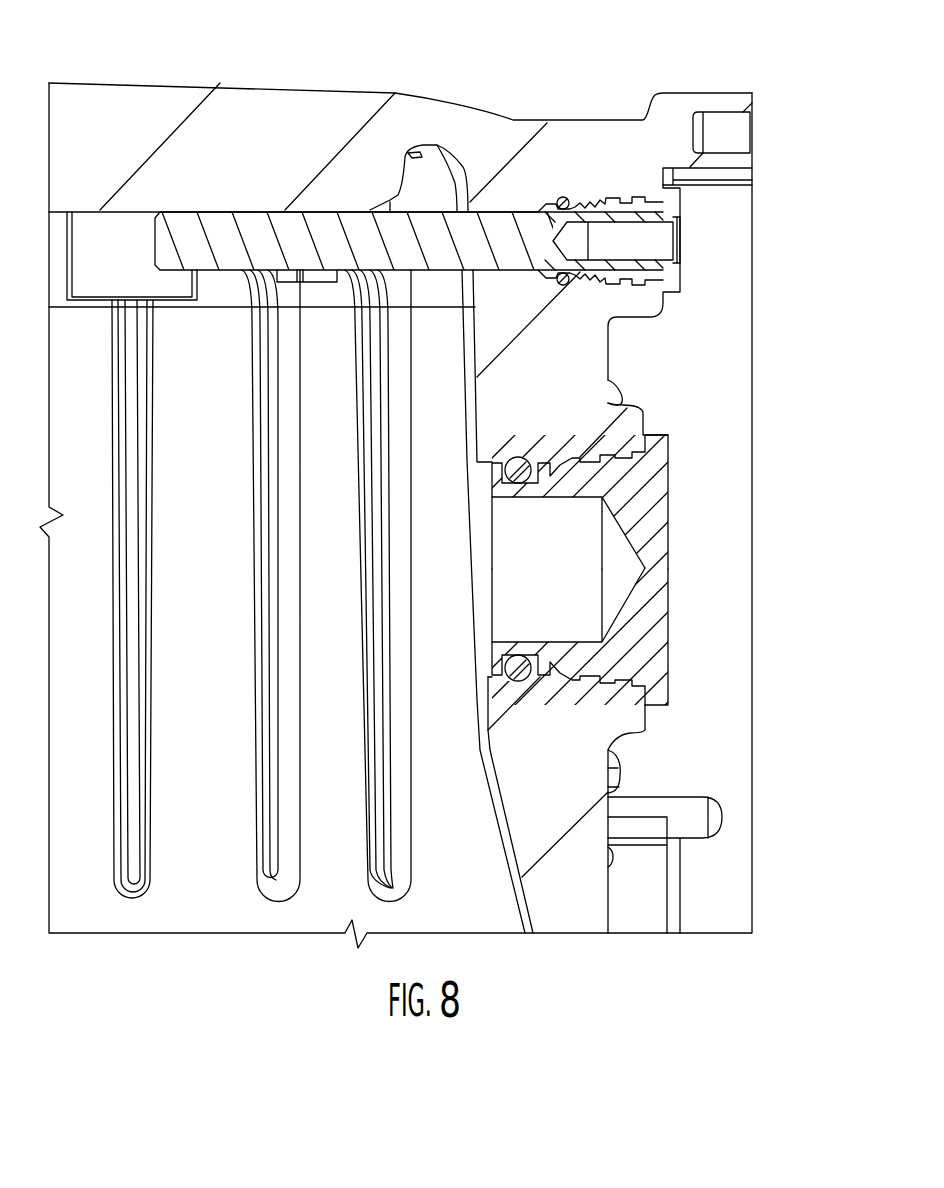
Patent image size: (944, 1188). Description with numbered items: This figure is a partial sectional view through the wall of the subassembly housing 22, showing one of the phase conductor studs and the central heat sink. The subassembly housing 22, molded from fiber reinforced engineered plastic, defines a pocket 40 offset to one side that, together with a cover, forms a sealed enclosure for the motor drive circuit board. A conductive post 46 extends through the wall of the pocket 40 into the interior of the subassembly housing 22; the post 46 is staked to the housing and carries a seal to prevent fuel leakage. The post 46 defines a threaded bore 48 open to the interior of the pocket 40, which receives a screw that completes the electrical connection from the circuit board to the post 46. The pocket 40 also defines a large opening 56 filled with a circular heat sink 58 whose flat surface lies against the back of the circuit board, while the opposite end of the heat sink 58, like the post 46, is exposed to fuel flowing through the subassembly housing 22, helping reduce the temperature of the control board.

The subassembly housing 22 is at (172, 83).
The pocket 40 is at (717, 203).
The conductive posts 46 is at (313, 240).
The threaded bore 48 is at (680, 242).
The large opening 56 is at (668, 447).
The heat sink 58 is at (638, 643).